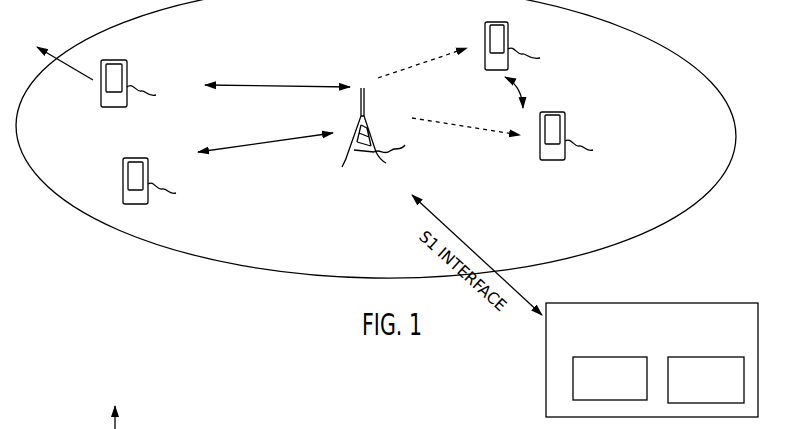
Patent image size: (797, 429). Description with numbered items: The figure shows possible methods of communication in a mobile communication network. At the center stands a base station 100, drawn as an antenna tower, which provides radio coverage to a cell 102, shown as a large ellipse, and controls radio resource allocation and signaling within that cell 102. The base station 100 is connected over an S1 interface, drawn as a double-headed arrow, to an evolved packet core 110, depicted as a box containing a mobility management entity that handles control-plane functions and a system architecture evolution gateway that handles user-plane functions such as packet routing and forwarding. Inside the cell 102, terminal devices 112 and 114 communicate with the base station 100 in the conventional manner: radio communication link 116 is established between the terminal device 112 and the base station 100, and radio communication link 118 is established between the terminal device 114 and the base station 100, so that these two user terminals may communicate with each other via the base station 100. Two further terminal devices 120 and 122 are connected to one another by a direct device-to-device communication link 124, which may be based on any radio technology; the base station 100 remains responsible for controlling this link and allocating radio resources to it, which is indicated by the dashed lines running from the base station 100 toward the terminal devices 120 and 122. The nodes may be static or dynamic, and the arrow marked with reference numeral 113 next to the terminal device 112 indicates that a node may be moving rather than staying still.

The base station 100 is at (388, 127).
The cell 102 is at (207, 48).
The evolved packet core 110 is at (582, 303).
The terminal device 112 is at (143, 84).
The movement of a node 113 is at (79, 72).
The terminal device 114 is at (164, 182).
The radio communication link 116 is at (275, 85).
The radio communication link 118 is at (248, 145).
The terminal device 120 is at (517, 136).
The terminal device 122 is at (473, 50).
The device-to-device communication link 124 is at (510, 96).